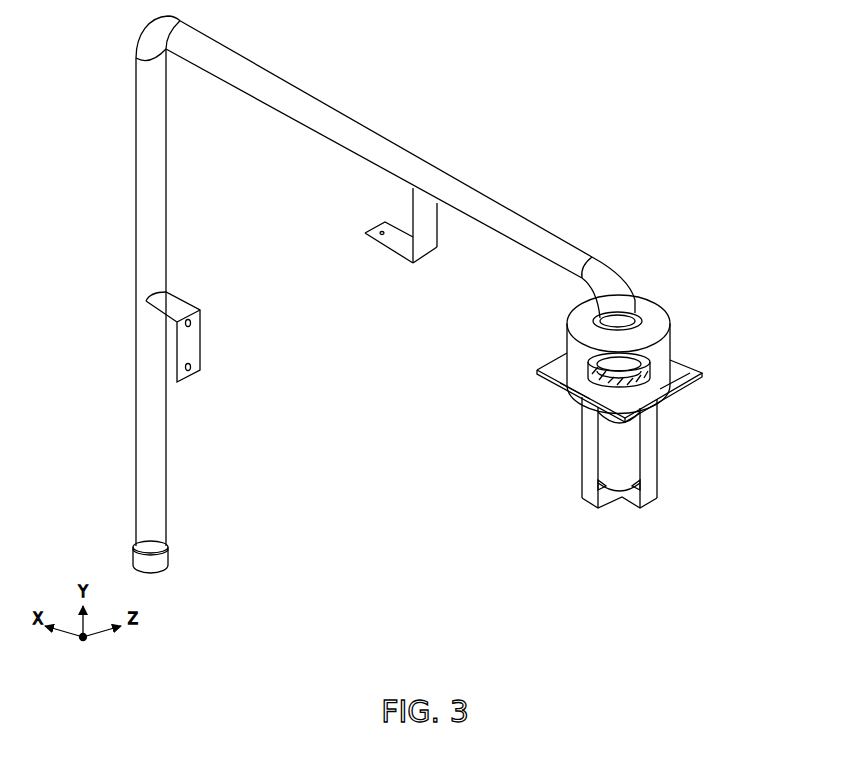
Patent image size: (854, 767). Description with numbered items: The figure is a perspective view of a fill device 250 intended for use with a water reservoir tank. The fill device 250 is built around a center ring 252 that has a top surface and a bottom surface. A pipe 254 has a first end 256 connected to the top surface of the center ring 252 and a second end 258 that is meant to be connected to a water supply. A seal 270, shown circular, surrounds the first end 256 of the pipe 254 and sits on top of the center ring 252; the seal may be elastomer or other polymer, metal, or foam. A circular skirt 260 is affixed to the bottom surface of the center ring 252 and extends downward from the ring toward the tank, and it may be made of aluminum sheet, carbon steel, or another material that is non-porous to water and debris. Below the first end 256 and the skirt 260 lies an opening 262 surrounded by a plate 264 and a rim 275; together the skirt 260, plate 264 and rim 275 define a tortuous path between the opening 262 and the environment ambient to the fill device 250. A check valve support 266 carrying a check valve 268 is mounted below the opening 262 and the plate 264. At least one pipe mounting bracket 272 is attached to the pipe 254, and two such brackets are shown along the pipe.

The fill device 250 is at (665, 280).
The center ring 252 is at (663, 332).
The pipe 254 is at (387, 145).
The first end 256 is at (625, 303).
The second end 258 is at (160, 562).
The circular skirt 260 is at (665, 362).
The opening 262 is at (605, 378).
The plate 264 is at (677, 380).
The check valve support 266 is at (592, 493).
The check valve 268 is at (632, 460).
The seal 270 is at (638, 312).
The pipe mounting bracket 272 is at (402, 243).
The rim 275 is at (588, 372).